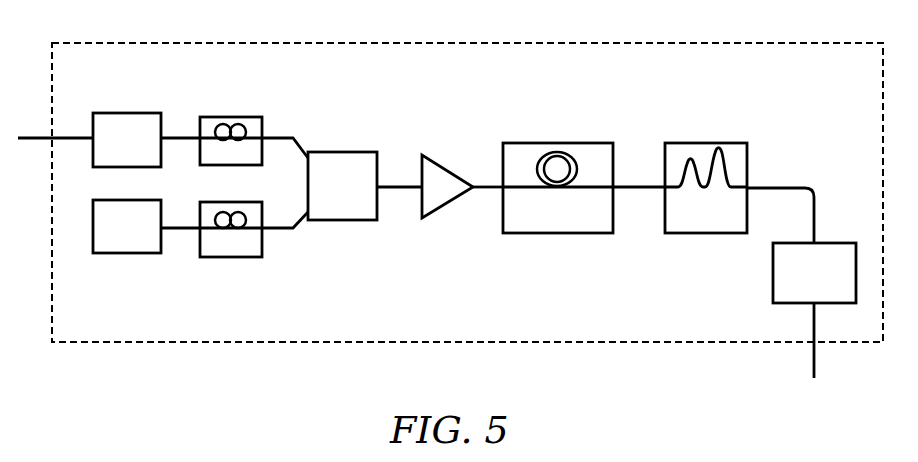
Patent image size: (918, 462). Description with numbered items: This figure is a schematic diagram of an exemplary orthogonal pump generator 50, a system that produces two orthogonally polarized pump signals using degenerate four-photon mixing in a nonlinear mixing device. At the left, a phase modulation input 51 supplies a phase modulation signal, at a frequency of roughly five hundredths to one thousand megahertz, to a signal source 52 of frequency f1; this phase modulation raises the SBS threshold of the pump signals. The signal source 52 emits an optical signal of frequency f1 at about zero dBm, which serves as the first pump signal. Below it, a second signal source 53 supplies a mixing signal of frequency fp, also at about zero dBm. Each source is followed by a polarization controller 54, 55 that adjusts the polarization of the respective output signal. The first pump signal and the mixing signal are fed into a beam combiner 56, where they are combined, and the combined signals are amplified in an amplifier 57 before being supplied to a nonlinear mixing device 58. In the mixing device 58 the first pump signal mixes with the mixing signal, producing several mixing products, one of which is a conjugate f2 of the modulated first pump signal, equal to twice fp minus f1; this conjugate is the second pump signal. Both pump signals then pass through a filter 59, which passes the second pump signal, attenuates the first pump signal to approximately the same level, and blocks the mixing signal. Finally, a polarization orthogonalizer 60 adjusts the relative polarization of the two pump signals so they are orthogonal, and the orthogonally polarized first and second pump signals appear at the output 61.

The orthogonal pump generator 50 is at (448, 49).
The phase modulation input 51 is at (77, 136).
The signal source 52 is at (135, 113).
The second signal source 53 is at (125, 253).
The polarization controller 54 is at (235, 117).
The polarization controller 55 is at (225, 257).
The beam combiner 56 is at (345, 152).
The amplifier 57 is at (452, 168).
The nonlinear mixing device 58 is at (562, 143).
The filter 59 is at (710, 143).
The polarization orthogonalizer 60 is at (773, 272).
The output 61 is at (814, 322).